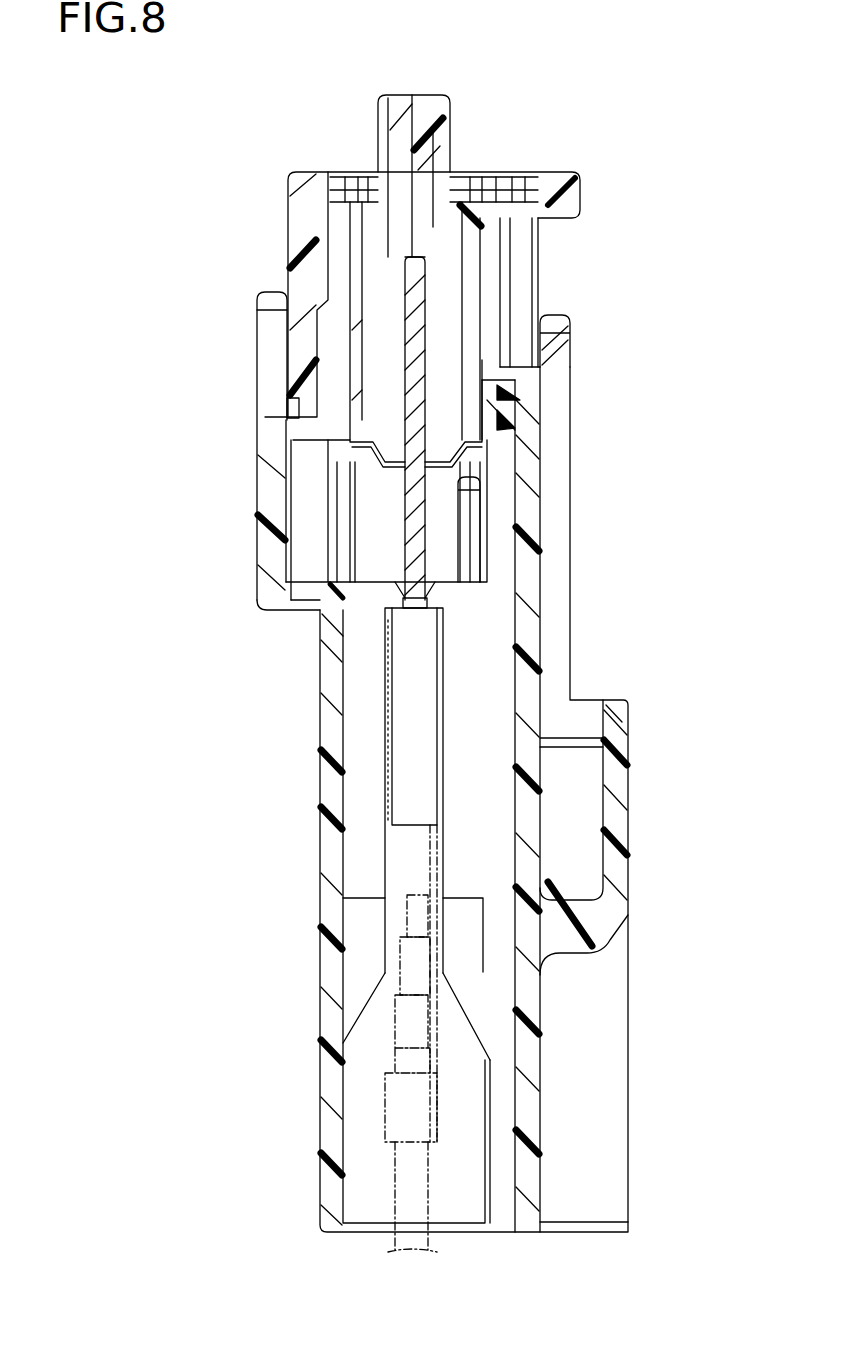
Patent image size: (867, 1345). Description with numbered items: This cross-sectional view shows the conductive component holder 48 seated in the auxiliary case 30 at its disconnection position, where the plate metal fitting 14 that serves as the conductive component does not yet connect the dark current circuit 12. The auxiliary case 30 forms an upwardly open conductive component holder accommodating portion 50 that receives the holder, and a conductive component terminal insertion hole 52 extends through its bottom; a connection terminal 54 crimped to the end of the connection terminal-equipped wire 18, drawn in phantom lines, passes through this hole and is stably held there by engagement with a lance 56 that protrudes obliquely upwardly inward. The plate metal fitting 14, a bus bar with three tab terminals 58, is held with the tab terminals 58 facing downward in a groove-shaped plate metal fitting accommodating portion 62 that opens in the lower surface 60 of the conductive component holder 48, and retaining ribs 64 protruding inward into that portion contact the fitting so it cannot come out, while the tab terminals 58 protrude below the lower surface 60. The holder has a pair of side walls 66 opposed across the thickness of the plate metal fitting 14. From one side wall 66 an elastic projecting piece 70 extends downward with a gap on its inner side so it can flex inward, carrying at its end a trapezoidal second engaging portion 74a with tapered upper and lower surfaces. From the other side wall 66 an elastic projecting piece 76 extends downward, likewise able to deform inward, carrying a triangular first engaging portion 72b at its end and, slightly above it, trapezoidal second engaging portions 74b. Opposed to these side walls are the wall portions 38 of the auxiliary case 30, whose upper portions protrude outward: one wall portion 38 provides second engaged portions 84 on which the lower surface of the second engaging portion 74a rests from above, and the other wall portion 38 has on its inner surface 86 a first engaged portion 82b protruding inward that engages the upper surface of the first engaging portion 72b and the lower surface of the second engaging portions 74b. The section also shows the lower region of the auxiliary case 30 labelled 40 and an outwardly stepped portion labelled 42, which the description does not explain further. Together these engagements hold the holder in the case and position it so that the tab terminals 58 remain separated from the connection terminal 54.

The dark current circuit 12 is at (357, 1038).
The plate metal fitting 14 is at (413, 322).
The connection terminal-equipped wire 18 is at (365, 1104).
The auxiliary case 30 is at (605, 570).
The wall portion 38 is at (332, 848).
The base portion 40 is at (590, 1025).
The flange portion 42 is at (617, 838).
The conductive component holder 48 is at (447, 50).
The conductive component holder accommodating portion 50 is at (287, 317).
The conductive component terminal insertion hole 52 is at (343, 682).
The connection terminal 54 is at (360, 697).
The lance 56 is at (370, 887).
The tab terminal 58 is at (415, 518).
The lower surface 60 is at (300, 442).
The plate metal fitting accommodating portion 62 is at (415, 355).
The retaining rib 64 is at (428, 312).
The side wall 66 is at (305, 210).
The elastic projecting piece 70 is at (312, 248).
The first engaging portion 72b is at (497, 416).
The second engaging portion 74a is at (277, 403).
The second engaging portion 74b is at (488, 375).
The elastic projecting piece 76 is at (470, 262).
The first engaged portion 82b is at (495, 405).
The second engaged portion 84 is at (270, 494).
The inner surface 86 is at (505, 458).